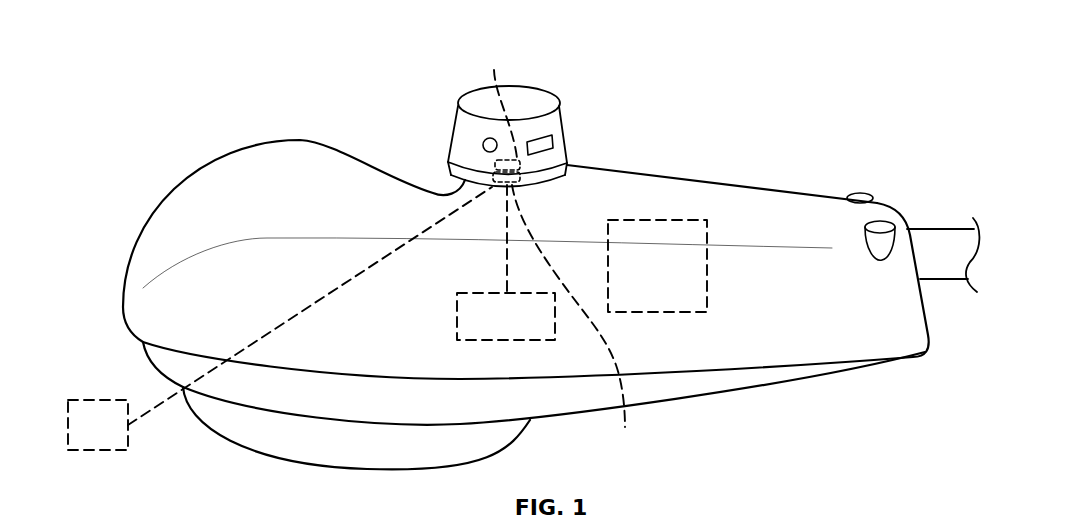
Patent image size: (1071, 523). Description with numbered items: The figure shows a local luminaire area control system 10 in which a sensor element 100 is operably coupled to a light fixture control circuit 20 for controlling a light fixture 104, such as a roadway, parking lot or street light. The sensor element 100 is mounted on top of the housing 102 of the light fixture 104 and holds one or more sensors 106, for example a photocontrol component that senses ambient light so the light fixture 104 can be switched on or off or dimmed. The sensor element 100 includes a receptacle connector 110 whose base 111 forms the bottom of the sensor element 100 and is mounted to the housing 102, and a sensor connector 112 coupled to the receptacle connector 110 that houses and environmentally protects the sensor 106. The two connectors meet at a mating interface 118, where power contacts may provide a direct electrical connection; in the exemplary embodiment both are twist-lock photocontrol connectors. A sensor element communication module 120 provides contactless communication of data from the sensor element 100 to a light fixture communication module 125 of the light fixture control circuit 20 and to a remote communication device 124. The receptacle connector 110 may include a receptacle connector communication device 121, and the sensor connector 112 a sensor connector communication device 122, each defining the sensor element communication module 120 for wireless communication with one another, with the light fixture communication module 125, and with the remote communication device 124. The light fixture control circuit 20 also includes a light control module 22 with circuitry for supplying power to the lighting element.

The local luminaire area (LLA) control system 10 is at (224, 92).
The light fixture control circuit 20 is at (858, 383).
The light control module 22 is at (702, 318).
The sensor element 100 is at (460, 42).
The housing 102 is at (743, 235).
The light fixture 104 is at (688, 165).
The sensor 106 is at (488, 138).
The receptacle connector 110 is at (458, 168).
The base 111 is at (447, 143).
The sensor connector 112 is at (470, 130).
The mating interface 118 is at (572, 152).
The sensor element communication module 120 is at (537, 176).
The receptacle connector communication device 121 is at (580, 321).
The sensor connector communication device 122 is at (497, 103).
The remote communication device 124 is at (100, 452).
The light fixture communication module 125 is at (458, 315).